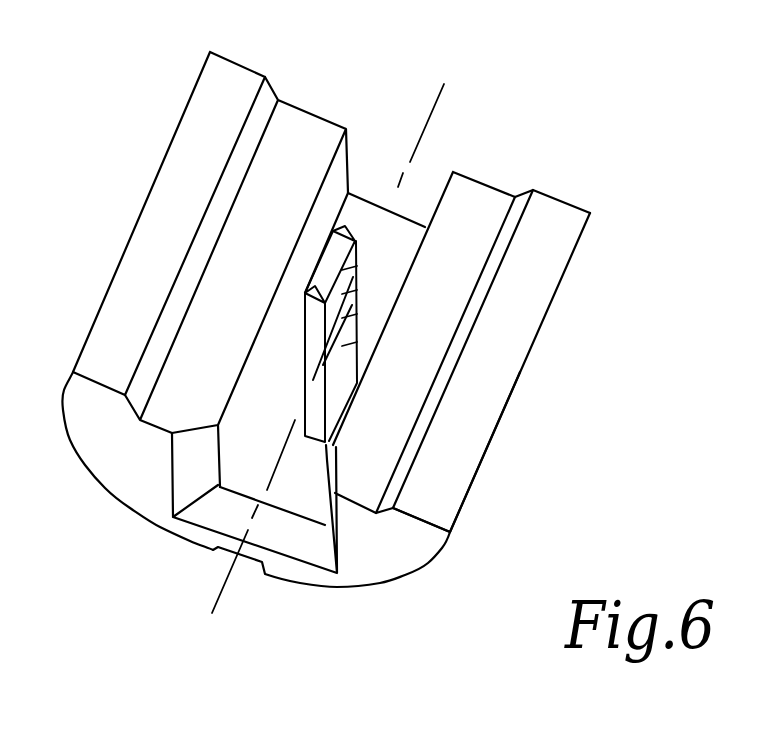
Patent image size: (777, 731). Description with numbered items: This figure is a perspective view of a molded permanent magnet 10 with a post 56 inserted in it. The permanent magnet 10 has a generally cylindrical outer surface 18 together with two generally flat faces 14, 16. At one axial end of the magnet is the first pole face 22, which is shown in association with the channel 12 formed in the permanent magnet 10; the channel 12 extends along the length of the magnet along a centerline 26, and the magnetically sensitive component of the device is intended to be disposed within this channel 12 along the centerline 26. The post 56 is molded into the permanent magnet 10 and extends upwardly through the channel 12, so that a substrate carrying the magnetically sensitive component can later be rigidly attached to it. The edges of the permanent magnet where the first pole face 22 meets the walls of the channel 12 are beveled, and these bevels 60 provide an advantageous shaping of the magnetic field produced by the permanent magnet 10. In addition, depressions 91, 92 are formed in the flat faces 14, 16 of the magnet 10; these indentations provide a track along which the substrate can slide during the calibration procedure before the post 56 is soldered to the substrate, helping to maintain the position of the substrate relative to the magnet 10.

The permanent magnet 10 is at (480, 190).
The channel 12 is at (363, 267).
The flat face 14 is at (500, 375).
The flat face 16 is at (182, 162).
The generally cylindrical outer surface 18 is at (485, 453).
The first pole face 22 is at (109, 465).
The centerline 26 is at (444, 84).
The post 56 is at (355, 248).
The bevels 60 is at (185, 482).
The depression 91 is at (480, 243).
The depression 92 is at (305, 130).